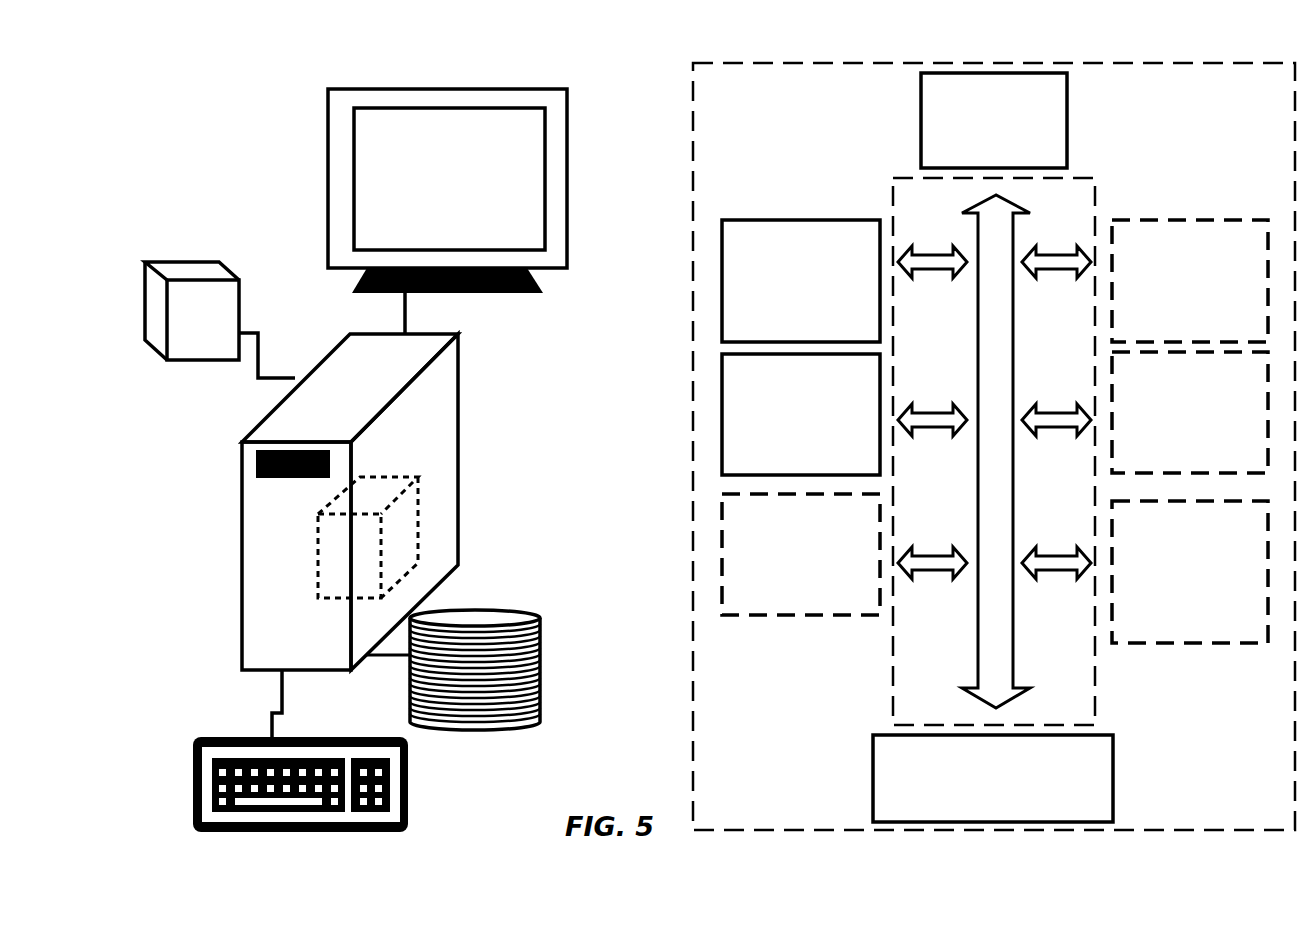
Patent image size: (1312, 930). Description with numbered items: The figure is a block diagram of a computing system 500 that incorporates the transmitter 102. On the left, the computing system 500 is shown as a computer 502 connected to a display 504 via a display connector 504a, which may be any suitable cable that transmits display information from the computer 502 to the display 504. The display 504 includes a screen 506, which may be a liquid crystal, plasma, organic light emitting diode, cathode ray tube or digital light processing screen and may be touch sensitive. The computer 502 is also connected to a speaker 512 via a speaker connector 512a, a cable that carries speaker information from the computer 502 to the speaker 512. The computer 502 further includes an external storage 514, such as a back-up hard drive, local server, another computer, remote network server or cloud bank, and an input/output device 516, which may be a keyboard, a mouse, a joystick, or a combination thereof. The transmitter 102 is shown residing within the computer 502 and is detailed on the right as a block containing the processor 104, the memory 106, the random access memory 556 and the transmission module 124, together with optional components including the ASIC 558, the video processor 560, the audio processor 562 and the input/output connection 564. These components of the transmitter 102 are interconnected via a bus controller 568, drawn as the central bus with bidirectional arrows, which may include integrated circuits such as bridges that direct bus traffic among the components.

The computing system 500 is at (246, 100).
The computer 502 is at (372, 409).
The display 504 is at (328, 185).
The screen 506 is at (354, 222).
The display connector 504a is at (403, 295).
The speaker 512 is at (222, 354).
The speaker connector 512a is at (258, 382).
The transmitter 102 is at (322, 562).
The external storage 514 is at (542, 680).
The input/output device 516 is at (408, 778).
The processor 104 is at (1018, 109).
The memory 106 is at (824, 258).
The random access memory (RAM) 556 is at (824, 391).
The ASIC 558 is at (824, 529).
The video processor 560 is at (1213, 255).
The audio processor 562 is at (1213, 384).
The input/output connection 564 is at (1213, 532).
The bus controller 568 is at (893, 618).
The transmission module 124 is at (933, 814).